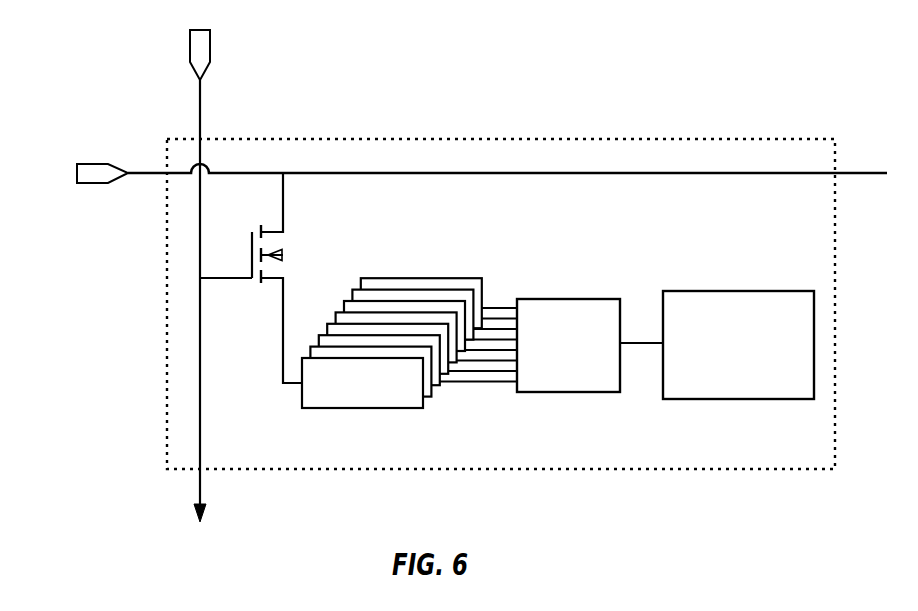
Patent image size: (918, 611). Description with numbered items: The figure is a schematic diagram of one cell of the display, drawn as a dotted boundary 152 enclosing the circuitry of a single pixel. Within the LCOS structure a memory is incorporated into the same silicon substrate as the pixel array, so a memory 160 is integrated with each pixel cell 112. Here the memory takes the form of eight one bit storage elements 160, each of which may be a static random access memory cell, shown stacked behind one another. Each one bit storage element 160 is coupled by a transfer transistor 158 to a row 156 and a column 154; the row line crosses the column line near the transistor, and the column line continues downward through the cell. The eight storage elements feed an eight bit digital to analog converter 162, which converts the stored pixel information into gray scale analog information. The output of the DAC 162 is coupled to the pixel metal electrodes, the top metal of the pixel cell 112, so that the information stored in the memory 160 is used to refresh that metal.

The pixel cell 112 is at (725, 399).
The pixel circuit 152 is at (370, 139).
The column 154 is at (200, 115).
The row 156 is at (153, 173).
The transfer transistor 158 is at (250, 250).
The one bit storage element 160 is at (357, 408).
The digital to analog converter (DAC) 162 is at (552, 392).